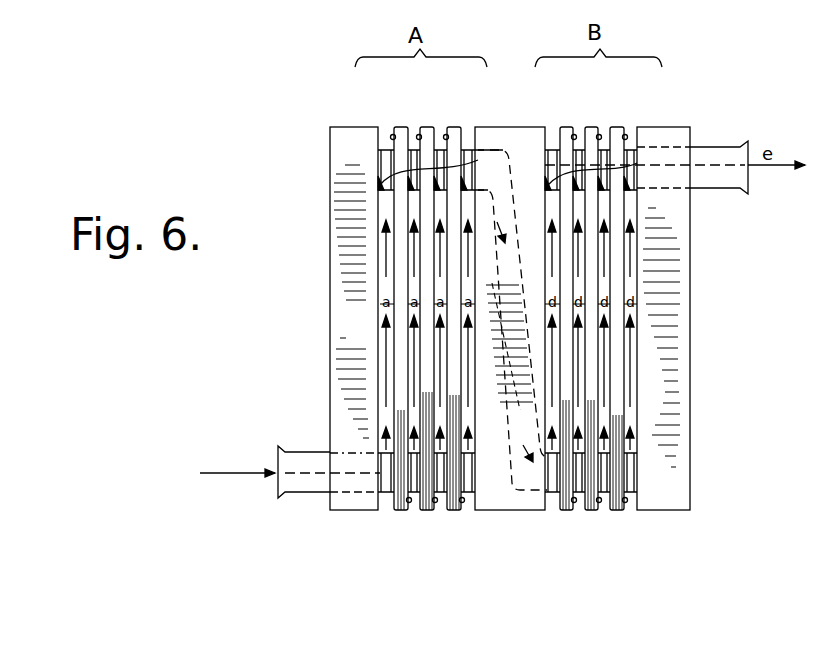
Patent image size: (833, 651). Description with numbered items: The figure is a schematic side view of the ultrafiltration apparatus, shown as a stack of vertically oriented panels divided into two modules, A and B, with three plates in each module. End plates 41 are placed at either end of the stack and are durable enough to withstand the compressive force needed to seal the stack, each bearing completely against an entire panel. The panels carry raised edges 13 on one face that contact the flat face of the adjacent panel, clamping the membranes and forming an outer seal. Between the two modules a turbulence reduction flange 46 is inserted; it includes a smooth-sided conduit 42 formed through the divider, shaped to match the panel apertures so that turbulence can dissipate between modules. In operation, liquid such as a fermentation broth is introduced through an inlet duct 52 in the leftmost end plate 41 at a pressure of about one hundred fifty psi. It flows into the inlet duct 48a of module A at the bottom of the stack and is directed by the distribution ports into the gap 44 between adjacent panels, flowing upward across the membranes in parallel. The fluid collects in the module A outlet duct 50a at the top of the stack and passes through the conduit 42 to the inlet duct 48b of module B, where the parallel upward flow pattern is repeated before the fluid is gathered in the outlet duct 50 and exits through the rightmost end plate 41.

The end plate 41 is at (345, 147).
The raised edge 13 is at (406, 138).
The module A outlet duct 50a is at (438, 152).
The turbulence reduction flange 46 is at (508, 127).
The conduit 42 is at (507, 163).
The outlet duct 50 is at (606, 153).
The inlet duct 52 is at (300, 460).
The inlet duct of module A 48a is at (417, 492).
The gap 44 is at (468, 507).
The inlet duct of module B 48b is at (604, 512).